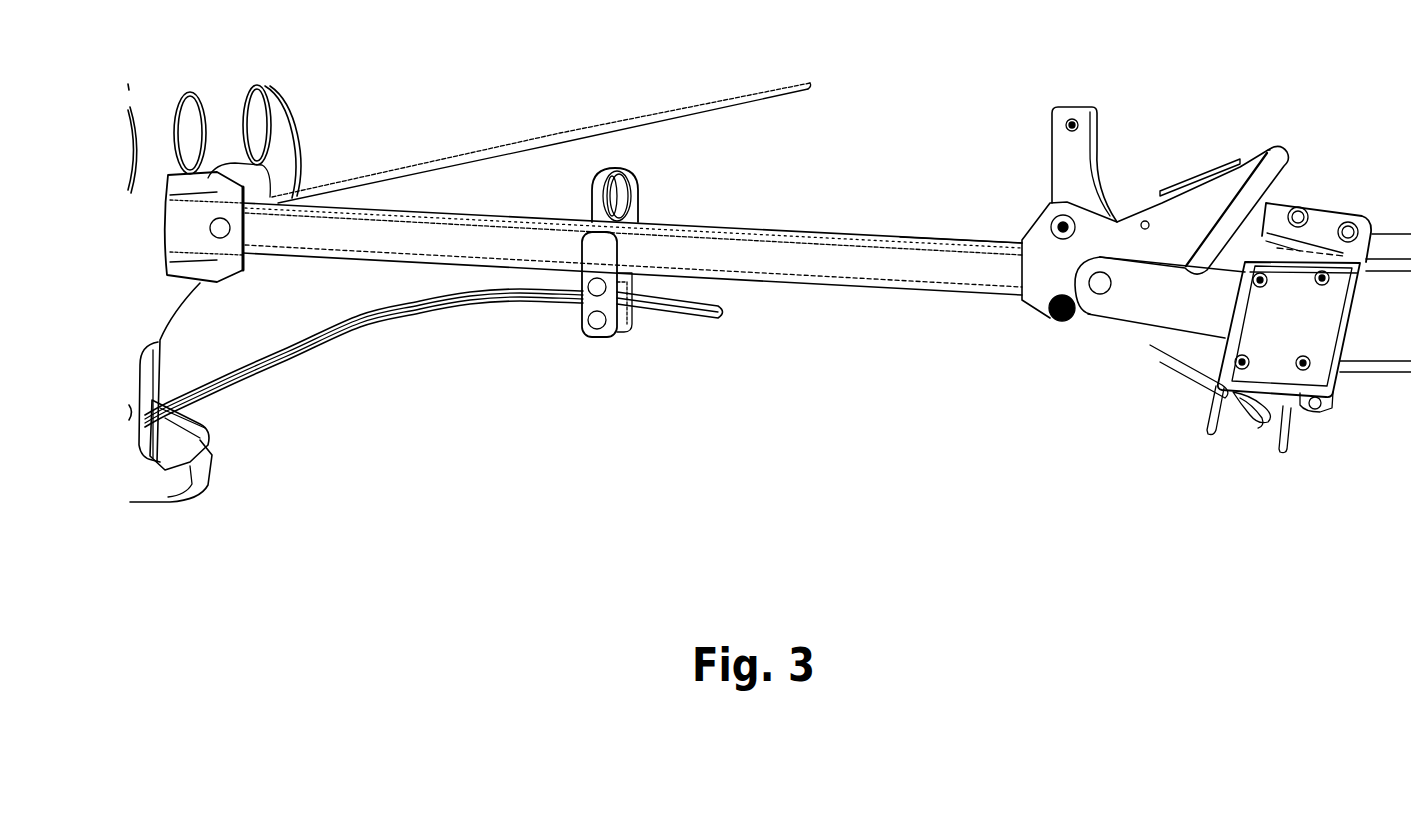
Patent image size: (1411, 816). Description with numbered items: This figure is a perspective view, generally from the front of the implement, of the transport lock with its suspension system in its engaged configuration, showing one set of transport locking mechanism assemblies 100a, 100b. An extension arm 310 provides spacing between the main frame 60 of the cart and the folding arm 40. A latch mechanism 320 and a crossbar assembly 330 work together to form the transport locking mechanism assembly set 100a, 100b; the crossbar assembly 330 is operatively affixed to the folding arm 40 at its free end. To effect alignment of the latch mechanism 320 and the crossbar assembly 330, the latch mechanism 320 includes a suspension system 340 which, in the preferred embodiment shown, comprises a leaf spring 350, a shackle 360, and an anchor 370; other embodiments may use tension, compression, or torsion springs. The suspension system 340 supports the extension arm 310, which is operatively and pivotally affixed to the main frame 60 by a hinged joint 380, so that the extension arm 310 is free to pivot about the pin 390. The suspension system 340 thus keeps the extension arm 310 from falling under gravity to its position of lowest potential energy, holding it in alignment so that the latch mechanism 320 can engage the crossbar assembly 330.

The hinged joint 380 is at (297, 170).
The pin 390 is at (222, 228).
The main frame 60 is at (663, 80).
The extension arm 310 is at (753, 262).
The transport locking mechanism assembly 100a is at (925, 217).
The shackle 360 is at (617, 358).
The leaf spring 350 is at (380, 313).
The suspension system 340 is at (363, 413).
The anchor 370 is at (207, 422).
The crossbar assembly 330 is at (1143, 285).
The latch mechanism 320 is at (1188, 207).
The transport locking mechanism assembly 100b is at (1142, 333).
The folding arm 40 is at (1403, 335).